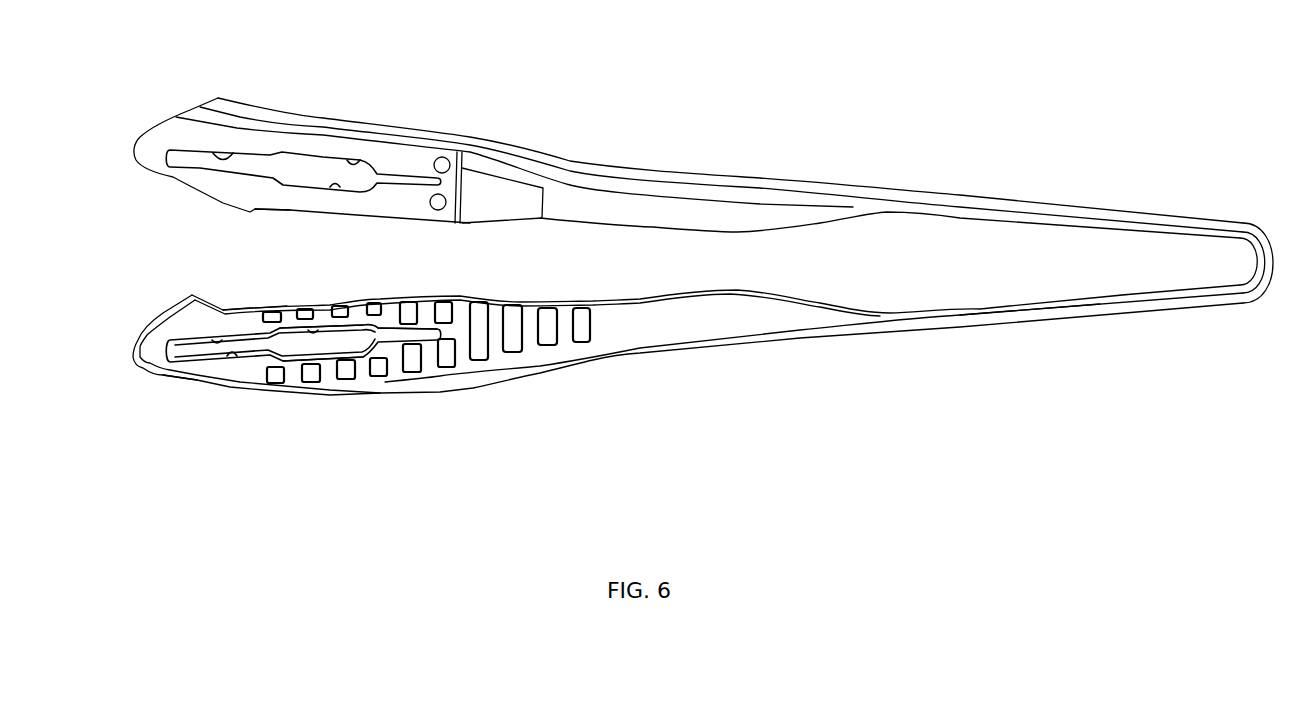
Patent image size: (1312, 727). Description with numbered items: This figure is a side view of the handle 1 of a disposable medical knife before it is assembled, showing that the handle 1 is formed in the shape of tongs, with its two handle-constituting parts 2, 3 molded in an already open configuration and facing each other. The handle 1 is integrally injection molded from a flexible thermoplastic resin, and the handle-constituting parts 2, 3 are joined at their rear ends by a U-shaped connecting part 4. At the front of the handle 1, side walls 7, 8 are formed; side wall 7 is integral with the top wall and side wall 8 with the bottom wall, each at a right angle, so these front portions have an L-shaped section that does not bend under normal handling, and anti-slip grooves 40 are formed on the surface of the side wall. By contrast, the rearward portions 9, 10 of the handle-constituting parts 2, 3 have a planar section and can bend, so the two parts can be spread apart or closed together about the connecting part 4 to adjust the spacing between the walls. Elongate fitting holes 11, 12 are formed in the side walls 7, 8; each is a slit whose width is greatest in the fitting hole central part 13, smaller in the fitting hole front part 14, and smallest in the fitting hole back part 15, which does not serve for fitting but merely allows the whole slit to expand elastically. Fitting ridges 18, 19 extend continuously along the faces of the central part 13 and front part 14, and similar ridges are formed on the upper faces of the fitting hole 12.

The handle 1 is at (734, 176).
The handle-constituting part 2 is at (678, 170).
The handle-constituting part 3 is at (695, 350).
The U-shaped connecting part 4 is at (1272, 270).
The side wall 7 is at (278, 197).
The side wall 8 is at (237, 327).
The rearward portion 9 is at (1057, 208).
The rearward portion 10 is at (1067, 315).
The fitting hole 11 is at (325, 173).
The fitting hole 12 is at (300, 342).
The fitting hole central part 13 is at (347, 338).
The fitting hole front part 14 is at (205, 353).
The fitting hole back part 15 is at (420, 332).
The fitting ridge 18 is at (357, 160).
The fitting ridge 19 is at (212, 150).
The anti-slip grooves 40 is at (478, 347).